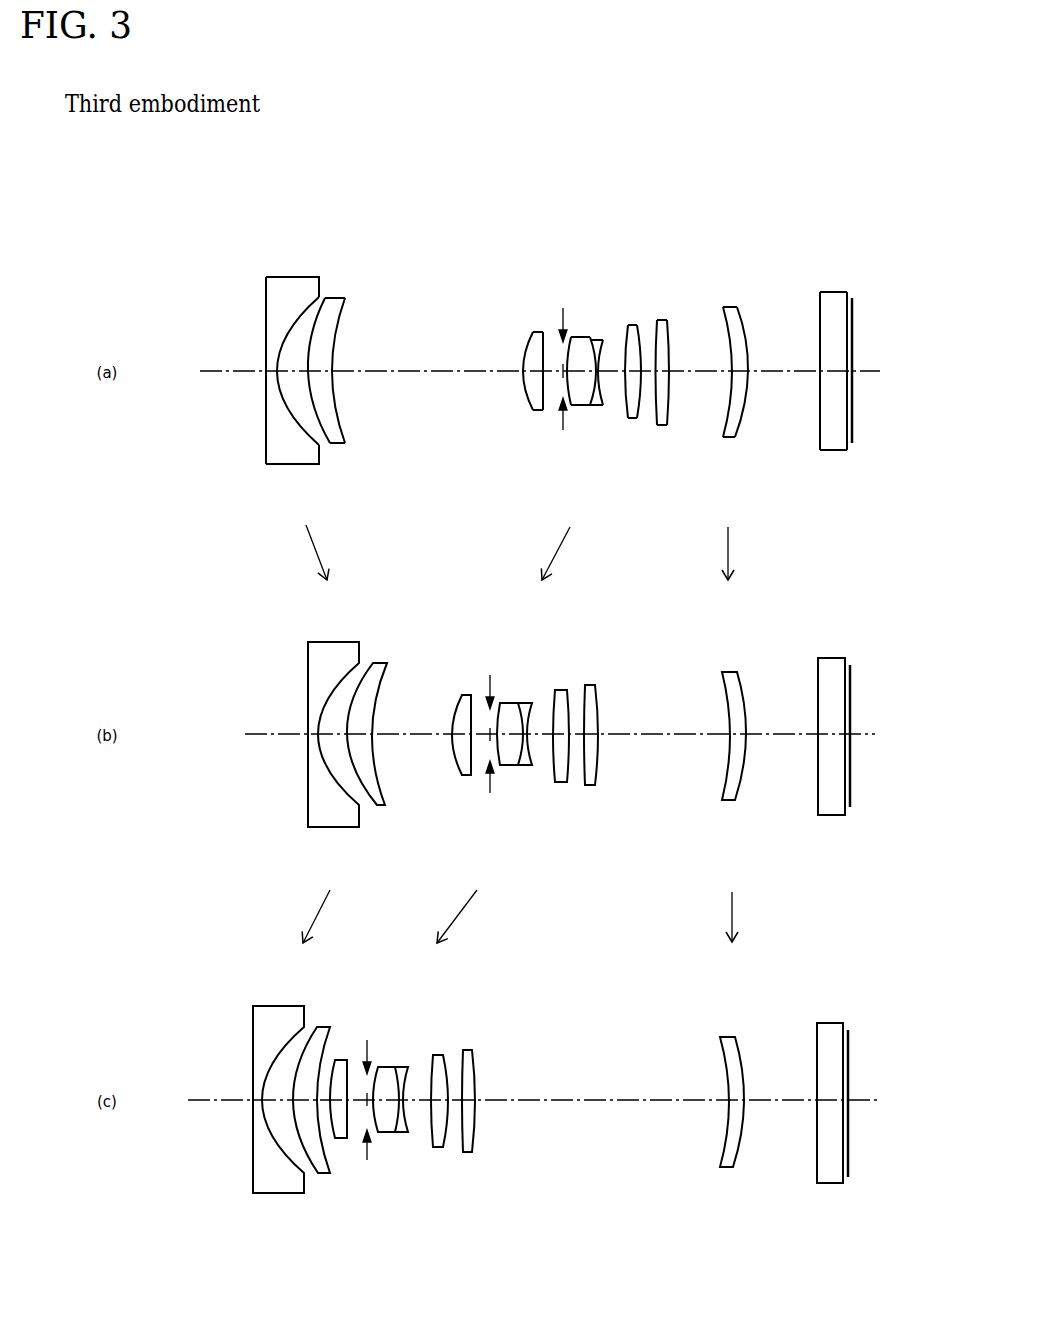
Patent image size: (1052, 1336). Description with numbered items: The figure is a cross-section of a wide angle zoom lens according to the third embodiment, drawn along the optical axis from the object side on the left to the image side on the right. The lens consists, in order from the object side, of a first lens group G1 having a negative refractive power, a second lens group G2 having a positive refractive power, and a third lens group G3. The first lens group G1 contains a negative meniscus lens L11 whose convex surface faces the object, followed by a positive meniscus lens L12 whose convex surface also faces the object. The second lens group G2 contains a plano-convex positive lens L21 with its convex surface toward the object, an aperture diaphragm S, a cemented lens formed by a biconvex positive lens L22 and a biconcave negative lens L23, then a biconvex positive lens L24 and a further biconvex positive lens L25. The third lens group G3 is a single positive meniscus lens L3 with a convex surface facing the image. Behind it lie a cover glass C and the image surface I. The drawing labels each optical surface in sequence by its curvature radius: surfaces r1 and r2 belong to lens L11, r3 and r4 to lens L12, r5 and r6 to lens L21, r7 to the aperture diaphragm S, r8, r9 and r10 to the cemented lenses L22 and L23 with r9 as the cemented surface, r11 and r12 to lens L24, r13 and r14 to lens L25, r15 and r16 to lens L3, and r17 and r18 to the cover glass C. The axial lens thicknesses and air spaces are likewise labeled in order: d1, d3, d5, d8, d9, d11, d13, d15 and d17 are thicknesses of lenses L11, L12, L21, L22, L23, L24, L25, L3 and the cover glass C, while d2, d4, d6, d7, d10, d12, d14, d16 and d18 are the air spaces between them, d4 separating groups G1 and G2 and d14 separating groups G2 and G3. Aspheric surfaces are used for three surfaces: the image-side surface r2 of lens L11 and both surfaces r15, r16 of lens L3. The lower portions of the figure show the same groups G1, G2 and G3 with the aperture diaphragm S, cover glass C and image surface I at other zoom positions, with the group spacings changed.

The first lens group G1 is at (373, 192).
The second lens group G2 is at (502, 192).
The third lens group G3 is at (718, 192).
The negative meniscus lens L11 is at (290, 283).
The positive meniscus lens L12 is at (343, 310).
The plano-convex positive lens L21 is at (532, 333).
The biconvex positive lens L22 is at (577, 337).
The biconcave negative lens L23 is at (597, 337).
The biconvex positive lens L24 is at (632, 325).
The biconvex positive lens L25 is at (667, 320).
The positive meniscus lens L3 is at (731, 307).
The aperture diaphragm S is at (562, 432).
The cover glass C is at (837, 442).
The image surface I is at (852, 407).
The curvature radius of lens surface r1 is at (266, 300).
The curvature radius of lens surface r2 is at (305, 302).
The curvature radius of lens surface r3 is at (325, 304).
The curvature radius of lens surface r4 is at (347, 300).
The curvature radius of lens surface r5 is at (524, 340).
The curvature radius of lens surface r6 is at (545, 332).
The curvature radius of lens surface r7 is at (561, 316).
The curvature radius of lens surface r8 is at (570, 336).
The curvature radius of lens surface r9 is at (595, 336).
The curvature radius of lens surface r10 is at (603, 340).
The curvature radius of lens surface r11 is at (627, 326).
The curvature radius of lens surface r12 is at (637, 326).
The curvature radius of lens surface r13 is at (660, 320).
The curvature radius of lens surface r14 is at (668, 322).
The curvature radius of lens surface r15 is at (724, 322).
The curvature radius of lens surface r16 is at (742, 322).
The curvature radius of lens surface r17 is at (820, 305).
The curvature radius of lens surface r18 is at (850, 298).
The lens thickness d1 is at (276, 375).
The air space d2 is at (292, 383).
The lens thickness d3 is at (331, 375).
The air space d4 is at (419, 383).
The lens thickness d5 is at (538, 375).
The air space d6 is at (552, 375).
The air space d7 is at (565, 375).
The lens thickness d8 is at (582, 383).
The lens thickness d9 is at (597, 375).
The air space d10 is at (614, 375).
The lens thickness d11 is at (633, 375).
The air space d12 is at (647, 375).
The lens thickness d13 is at (662, 375).
The air space d14 is at (697, 383).
The lens thickness d15 is at (738, 375).
The air space d16 is at (787, 383).
The lens thickness d17 is at (826, 375).
The air space d18 is at (849, 375).